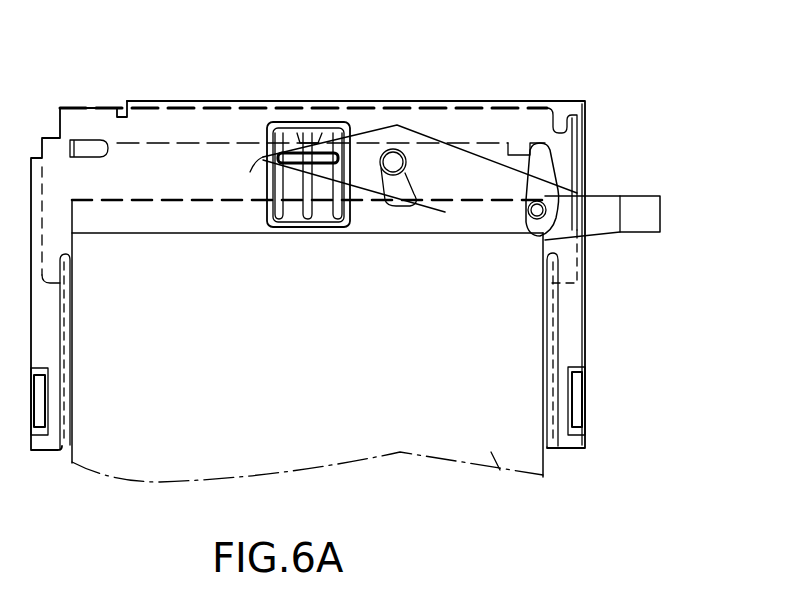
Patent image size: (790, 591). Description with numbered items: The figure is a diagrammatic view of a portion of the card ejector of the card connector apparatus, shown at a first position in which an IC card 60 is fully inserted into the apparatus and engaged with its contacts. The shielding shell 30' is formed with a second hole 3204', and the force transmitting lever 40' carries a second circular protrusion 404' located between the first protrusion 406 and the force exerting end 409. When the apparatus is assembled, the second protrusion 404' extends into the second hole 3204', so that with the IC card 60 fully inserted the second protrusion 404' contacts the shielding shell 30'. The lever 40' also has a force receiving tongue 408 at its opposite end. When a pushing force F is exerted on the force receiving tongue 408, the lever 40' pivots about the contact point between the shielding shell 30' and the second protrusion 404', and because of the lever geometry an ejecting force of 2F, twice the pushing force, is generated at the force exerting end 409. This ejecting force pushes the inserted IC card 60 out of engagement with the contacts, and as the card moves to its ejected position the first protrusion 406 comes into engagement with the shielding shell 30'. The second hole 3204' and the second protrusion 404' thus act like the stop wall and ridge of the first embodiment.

The shielding shell 30' is at (308, 262).
The ejecting force 2F is at (308, 131).
The force exerting end 409 is at (263, 158).
The second hole 3204' is at (413, 207).
The second circular protrusion 404' is at (440, 126).
The force transmitting lever 40' is at (307, 248).
The first protrusion 406 is at (530, 226).
The force receiving tongue 408 is at (635, 198).
The pushing force F is at (621, 254).
The IC card 60 is at (493, 455).